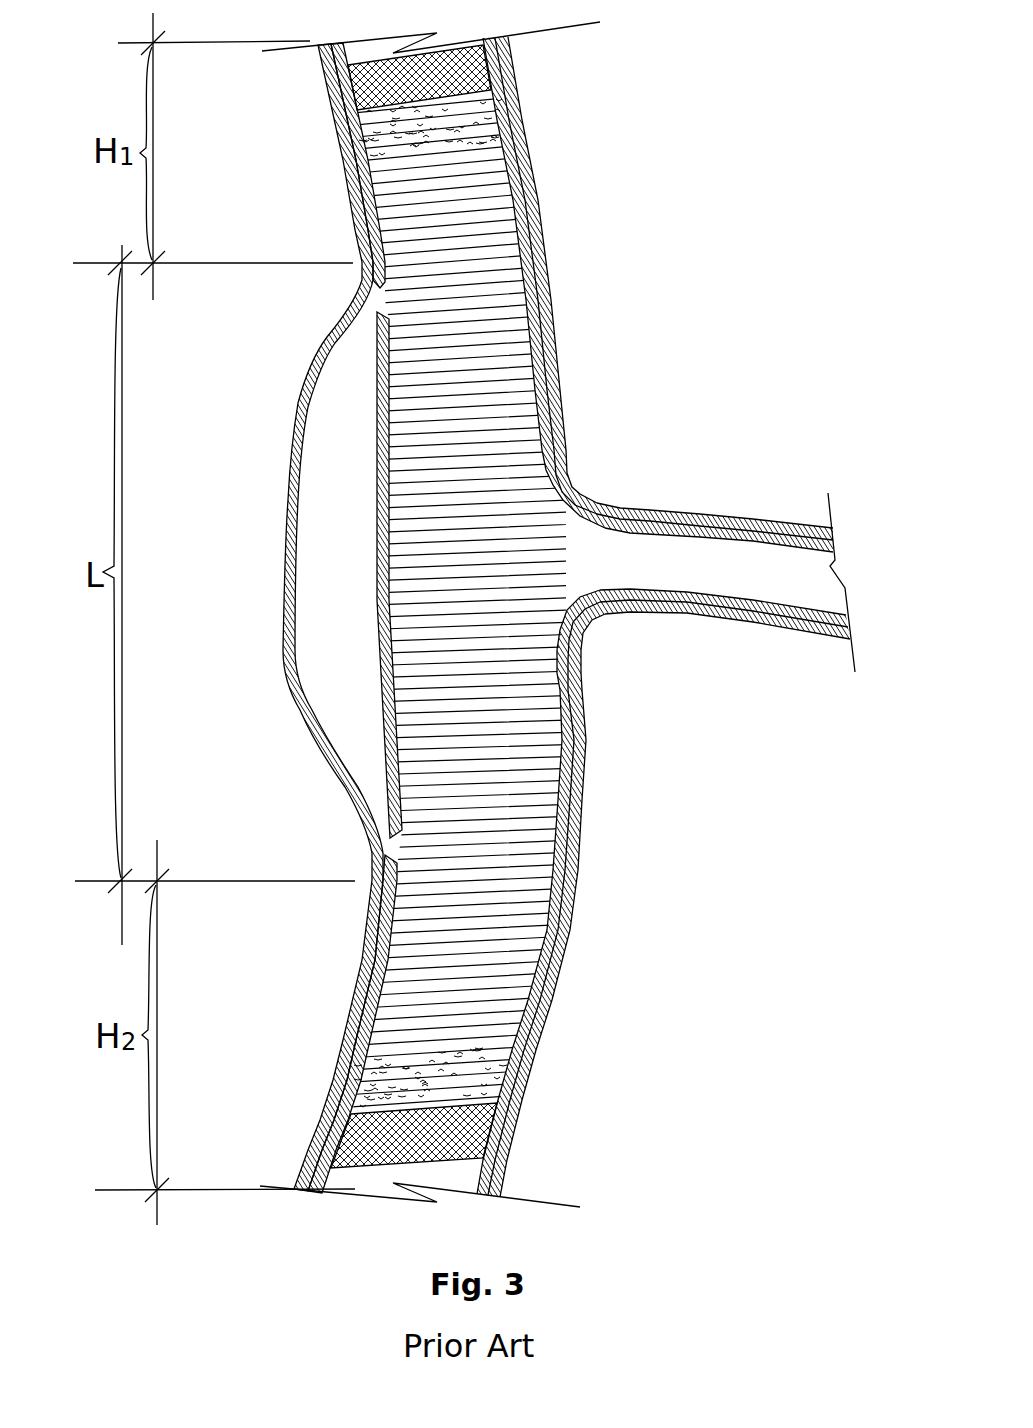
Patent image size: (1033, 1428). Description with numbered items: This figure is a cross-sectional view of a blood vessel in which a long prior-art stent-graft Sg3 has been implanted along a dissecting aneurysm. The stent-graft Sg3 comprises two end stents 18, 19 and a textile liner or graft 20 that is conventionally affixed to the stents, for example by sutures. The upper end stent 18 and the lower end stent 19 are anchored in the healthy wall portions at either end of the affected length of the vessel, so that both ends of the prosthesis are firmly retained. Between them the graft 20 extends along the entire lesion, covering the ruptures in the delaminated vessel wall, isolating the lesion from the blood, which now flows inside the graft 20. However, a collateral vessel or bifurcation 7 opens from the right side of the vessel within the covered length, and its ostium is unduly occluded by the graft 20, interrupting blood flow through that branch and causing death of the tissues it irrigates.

The end stent 18 is at (483, 92).
The end stent 19 is at (505, 1148).
The textile liner or graft 20 is at (468, 887).
The stent-graft Sg3 is at (566, 617).
The collateral vessel or bifurcation 7 is at (637, 621).